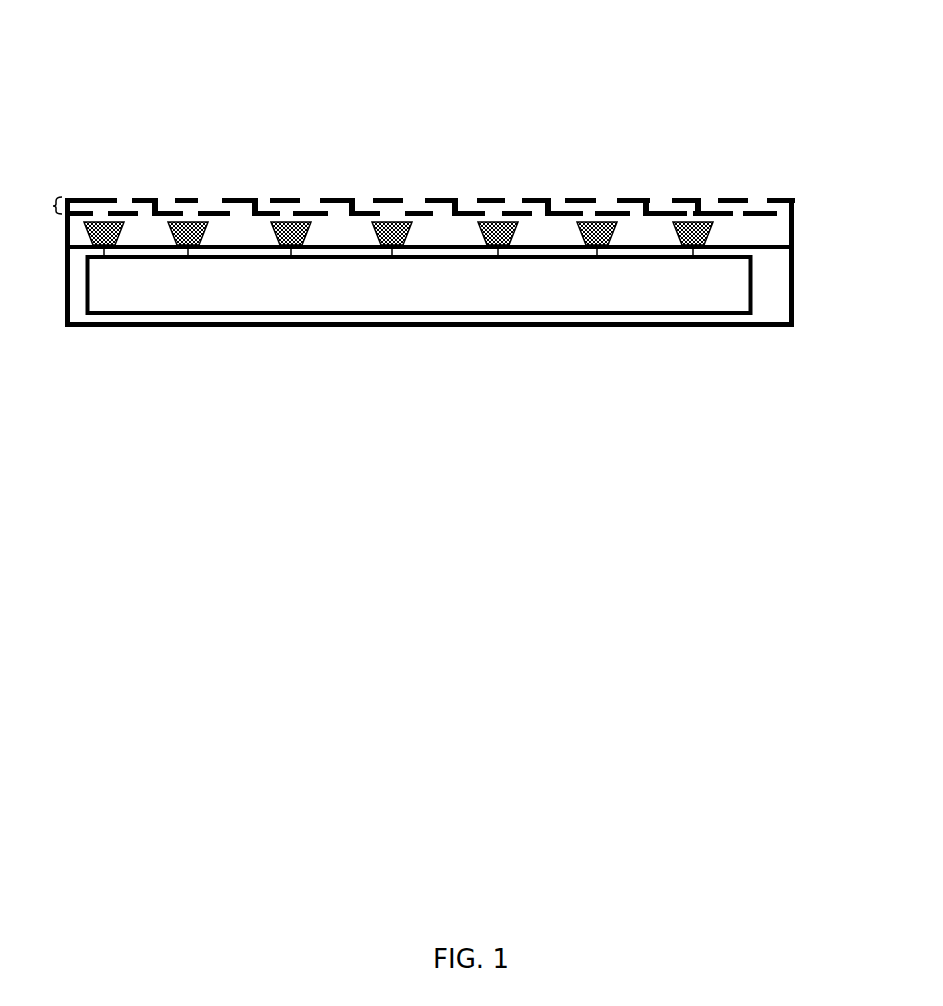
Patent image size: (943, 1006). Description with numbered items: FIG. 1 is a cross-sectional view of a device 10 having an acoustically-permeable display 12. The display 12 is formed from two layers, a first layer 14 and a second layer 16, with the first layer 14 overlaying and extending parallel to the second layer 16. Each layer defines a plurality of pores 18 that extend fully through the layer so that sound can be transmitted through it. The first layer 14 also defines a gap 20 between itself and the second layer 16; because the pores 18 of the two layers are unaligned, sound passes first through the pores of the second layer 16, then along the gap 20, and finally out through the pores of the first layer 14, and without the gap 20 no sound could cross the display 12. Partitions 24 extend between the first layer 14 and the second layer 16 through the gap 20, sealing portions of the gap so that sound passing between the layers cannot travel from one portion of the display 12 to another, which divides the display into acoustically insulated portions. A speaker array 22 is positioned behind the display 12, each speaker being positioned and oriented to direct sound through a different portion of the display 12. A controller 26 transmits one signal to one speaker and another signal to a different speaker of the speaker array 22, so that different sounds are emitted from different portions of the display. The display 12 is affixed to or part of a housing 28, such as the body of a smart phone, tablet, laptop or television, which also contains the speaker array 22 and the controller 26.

The device 10 is at (427, 153).
The acoustically-permeable display 12 is at (48, 206).
The first layer 14 is at (143, 198).
The second layer 16 is at (213, 207).
The pores 18 is at (514, 190).
The gap 20 is at (770, 206).
The speaker array 22 is at (593, 252).
The partitions 24 is at (262, 196).
The controller 26 is at (87, 278).
The housing 28 is at (741, 329).